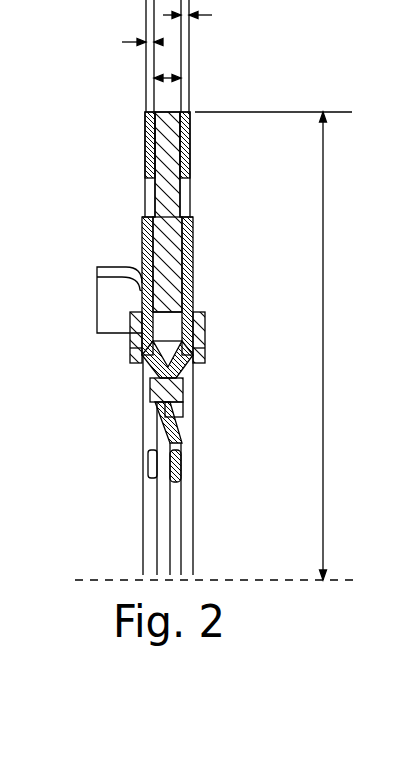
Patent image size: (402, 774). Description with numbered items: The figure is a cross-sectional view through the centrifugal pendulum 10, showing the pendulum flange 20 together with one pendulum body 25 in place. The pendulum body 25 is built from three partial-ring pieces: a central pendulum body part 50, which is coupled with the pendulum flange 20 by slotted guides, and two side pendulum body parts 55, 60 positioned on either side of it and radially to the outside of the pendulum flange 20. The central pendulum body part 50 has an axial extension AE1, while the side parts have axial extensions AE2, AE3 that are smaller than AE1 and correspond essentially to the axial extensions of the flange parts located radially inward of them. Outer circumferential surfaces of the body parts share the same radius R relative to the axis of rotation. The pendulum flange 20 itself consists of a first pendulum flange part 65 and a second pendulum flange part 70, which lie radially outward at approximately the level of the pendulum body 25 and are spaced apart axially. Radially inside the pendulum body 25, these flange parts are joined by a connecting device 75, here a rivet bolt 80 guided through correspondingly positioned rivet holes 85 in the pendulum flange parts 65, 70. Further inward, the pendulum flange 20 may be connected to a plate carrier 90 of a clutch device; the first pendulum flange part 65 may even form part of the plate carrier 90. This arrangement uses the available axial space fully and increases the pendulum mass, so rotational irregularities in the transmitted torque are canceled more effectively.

The centrifugal pendulum 10 is at (237, 92).
The pendulum flange 20 is at (210, 247).
The pendulum body 25 is at (170, 193).
The pendulum body part 50 is at (182, 197).
The pendulum body part 55 is at (145, 151).
The pendulum body part 60 is at (191, 135).
The pendulum flange part 65 is at (140, 336).
The pendulum flange part 70 is at (207, 316).
The connecting device 75 is at (188, 415).
The rivet bolt 80 is at (180, 392).
The rivet holes 85 is at (180, 372).
The plate carrier 90 is at (120, 300).
The axial extension AE1 is at (168, 78).
The axial extension AE2 is at (112, 56).
The axial extension AE3 is at (213, 56).
The radius R is at (215, 346).